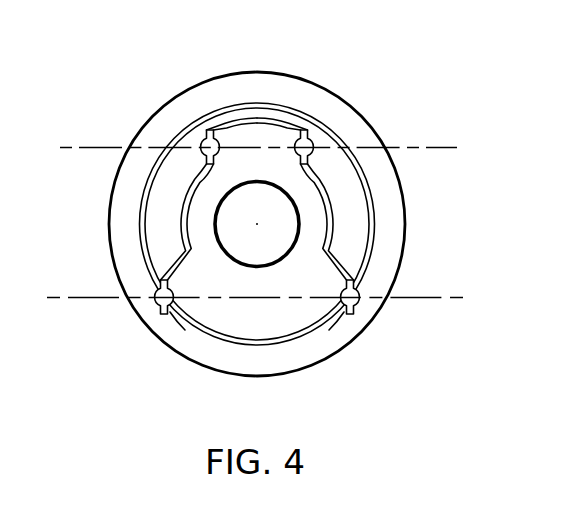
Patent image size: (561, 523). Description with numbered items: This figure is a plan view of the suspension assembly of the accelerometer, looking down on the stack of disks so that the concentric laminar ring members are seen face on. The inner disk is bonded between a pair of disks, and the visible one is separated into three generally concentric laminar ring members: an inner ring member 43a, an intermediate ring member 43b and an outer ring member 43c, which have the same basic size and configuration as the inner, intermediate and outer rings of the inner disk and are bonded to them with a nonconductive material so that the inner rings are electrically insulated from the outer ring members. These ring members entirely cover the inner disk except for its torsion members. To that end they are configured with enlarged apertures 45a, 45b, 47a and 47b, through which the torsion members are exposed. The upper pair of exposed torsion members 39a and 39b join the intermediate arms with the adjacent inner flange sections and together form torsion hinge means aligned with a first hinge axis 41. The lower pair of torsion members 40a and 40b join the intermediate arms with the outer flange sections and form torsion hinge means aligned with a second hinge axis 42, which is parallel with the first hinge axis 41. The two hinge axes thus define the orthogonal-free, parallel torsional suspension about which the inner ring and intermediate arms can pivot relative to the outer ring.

The torsion member 39a is at (203, 139).
The torsion member 39b is at (312, 139).
The torsion member 40a is at (156, 306).
The torsion member 40b is at (357, 306).
The first hinge axis 41 is at (440, 143).
The second hinge axis 42 is at (430, 295).
The ring member 43a is at (185, 198).
The ring member 43b is at (143, 219).
The ring member 43c is at (118, 276).
The enlarged aperture 45a is at (237, 123).
The enlarged aperture 45b is at (288, 123).
The enlarged aperture 47a is at (195, 308).
The enlarged aperture 47b is at (305, 326).